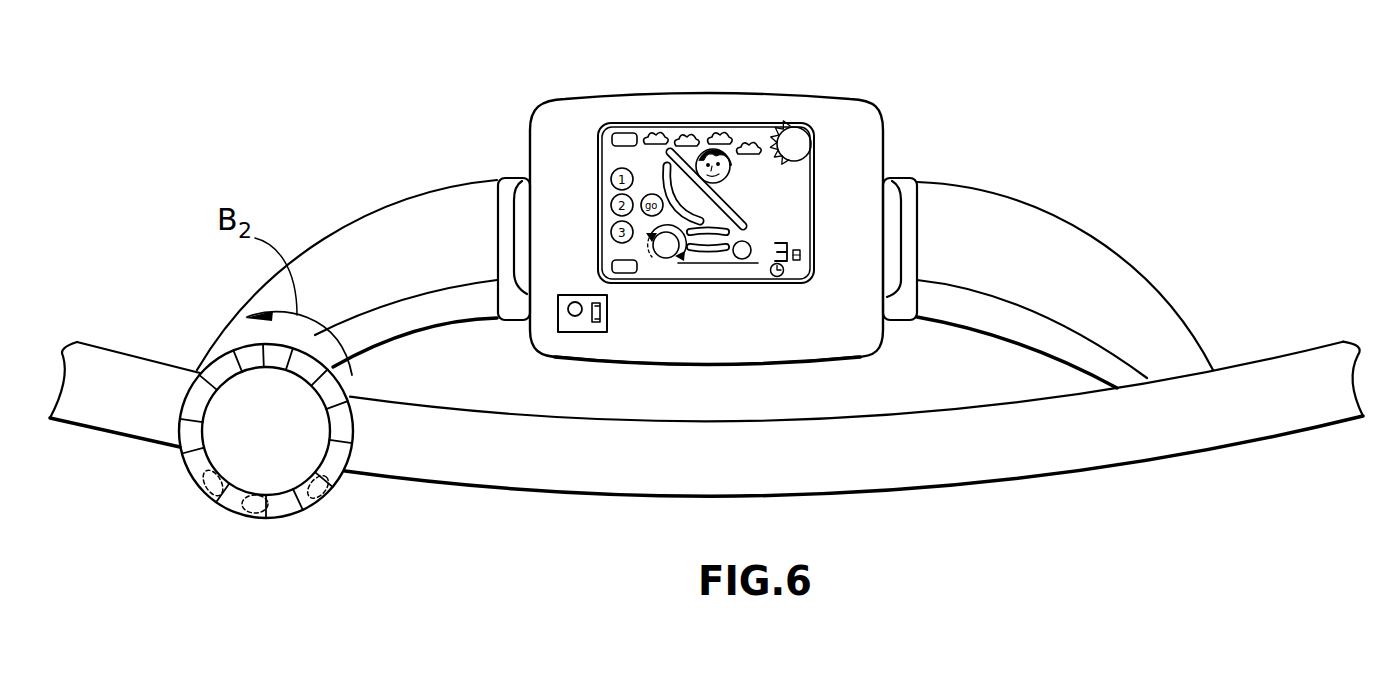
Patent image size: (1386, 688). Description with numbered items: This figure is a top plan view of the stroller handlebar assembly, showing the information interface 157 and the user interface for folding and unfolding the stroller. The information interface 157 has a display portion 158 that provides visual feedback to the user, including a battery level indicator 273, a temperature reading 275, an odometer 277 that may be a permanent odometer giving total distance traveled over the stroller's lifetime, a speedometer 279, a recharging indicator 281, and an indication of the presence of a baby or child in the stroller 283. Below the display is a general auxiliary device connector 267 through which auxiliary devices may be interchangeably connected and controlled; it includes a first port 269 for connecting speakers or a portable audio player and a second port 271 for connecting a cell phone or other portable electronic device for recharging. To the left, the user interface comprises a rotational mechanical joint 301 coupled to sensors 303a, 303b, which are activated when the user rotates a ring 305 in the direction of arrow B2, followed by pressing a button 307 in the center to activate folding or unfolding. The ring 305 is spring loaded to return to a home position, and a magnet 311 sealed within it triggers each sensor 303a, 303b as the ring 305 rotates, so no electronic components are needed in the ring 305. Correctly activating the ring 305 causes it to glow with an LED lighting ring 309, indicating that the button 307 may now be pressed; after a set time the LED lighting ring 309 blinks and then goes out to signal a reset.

The information interface 157 is at (693, 96).
The display portion 158 is at (817, 190).
The auxiliary device connector 267 is at (559, 332).
The first port 269 is at (567, 308).
The second port 271 is at (595, 317).
The battery level indicator 273 is at (625, 132).
The temperature reading 275 is at (808, 144).
The odometer 277 is at (612, 266).
The speedometer 279 is at (800, 260).
The recharging indicator 281 is at (648, 258).
The presence of a baby or child in the stroller 283 is at (721, 156).
The rotational mechanical joint 301 is at (275, 527).
The sensor 303a is at (255, 513).
The sensor 303b is at (323, 500).
The ring 305 is at (195, 452).
The button 307 is at (250, 408).
The LED lighting ring 309 is at (230, 497).
The magnet 311 is at (203, 493).